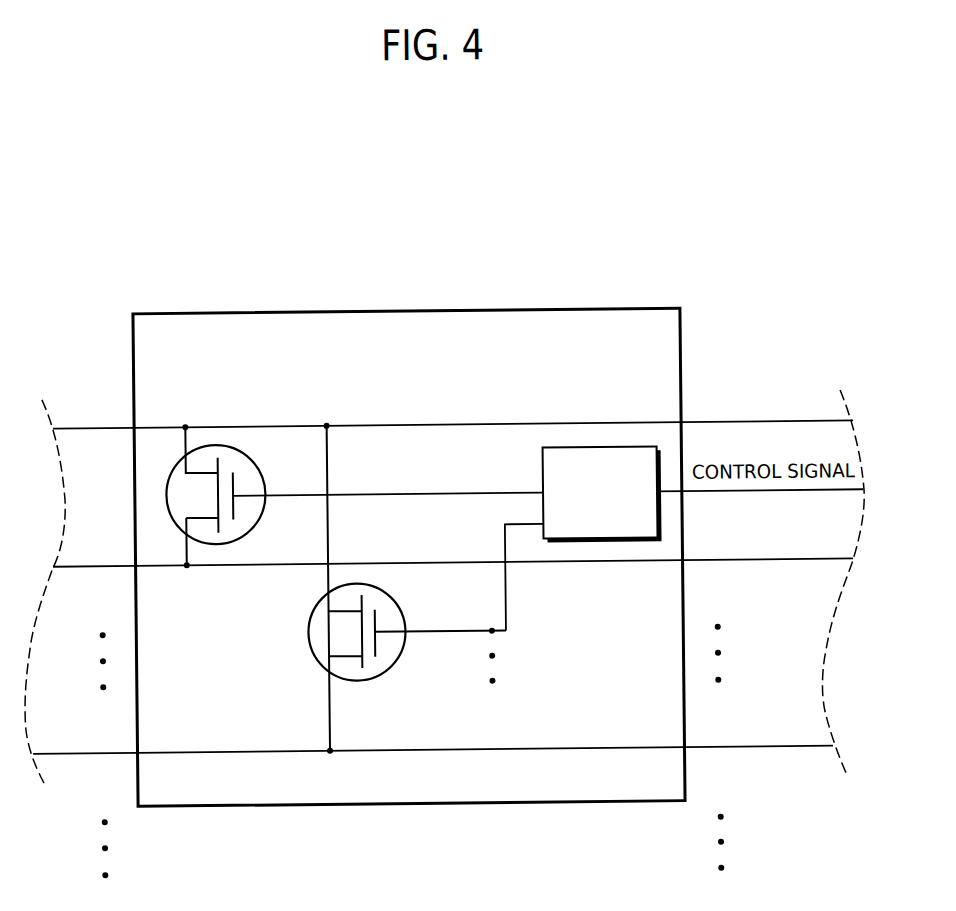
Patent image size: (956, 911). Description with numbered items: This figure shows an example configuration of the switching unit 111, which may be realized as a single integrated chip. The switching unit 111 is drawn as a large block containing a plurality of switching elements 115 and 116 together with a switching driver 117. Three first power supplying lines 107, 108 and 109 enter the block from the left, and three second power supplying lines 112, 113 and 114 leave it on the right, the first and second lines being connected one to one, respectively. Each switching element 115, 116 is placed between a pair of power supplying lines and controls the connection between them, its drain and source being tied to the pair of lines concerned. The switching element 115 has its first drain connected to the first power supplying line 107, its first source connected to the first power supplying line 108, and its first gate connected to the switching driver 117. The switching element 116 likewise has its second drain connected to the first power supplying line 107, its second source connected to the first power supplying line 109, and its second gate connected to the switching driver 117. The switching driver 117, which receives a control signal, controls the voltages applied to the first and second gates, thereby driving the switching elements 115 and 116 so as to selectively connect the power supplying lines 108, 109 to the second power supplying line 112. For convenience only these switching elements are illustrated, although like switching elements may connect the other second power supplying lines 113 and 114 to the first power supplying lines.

The first power supplying line 107 is at (98, 425).
The first power supplying line 108 is at (98, 565).
The first power supplying line 109 is at (68, 750).
The switching unit 111 is at (407, 311).
The second power supplying line 112 is at (771, 424).
The second power supplying line 113 is at (778, 564).
The second power supplying line 114 is at (776, 750).
The switching element 115 is at (209, 443).
The switching element 116 is at (398, 660).
The switching driver 117 is at (596, 449).